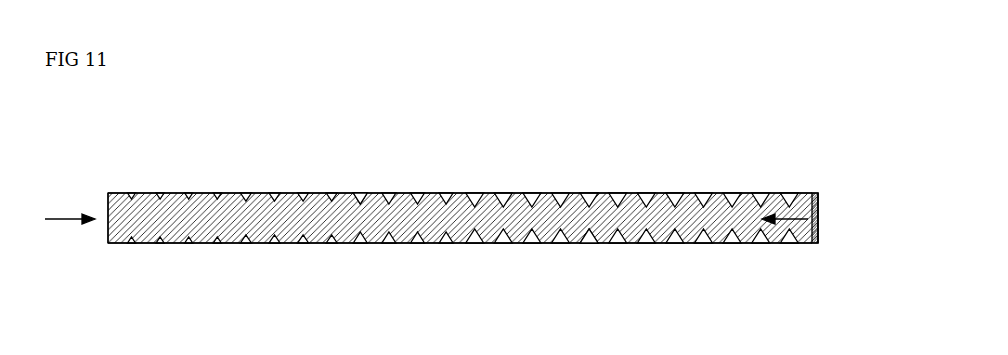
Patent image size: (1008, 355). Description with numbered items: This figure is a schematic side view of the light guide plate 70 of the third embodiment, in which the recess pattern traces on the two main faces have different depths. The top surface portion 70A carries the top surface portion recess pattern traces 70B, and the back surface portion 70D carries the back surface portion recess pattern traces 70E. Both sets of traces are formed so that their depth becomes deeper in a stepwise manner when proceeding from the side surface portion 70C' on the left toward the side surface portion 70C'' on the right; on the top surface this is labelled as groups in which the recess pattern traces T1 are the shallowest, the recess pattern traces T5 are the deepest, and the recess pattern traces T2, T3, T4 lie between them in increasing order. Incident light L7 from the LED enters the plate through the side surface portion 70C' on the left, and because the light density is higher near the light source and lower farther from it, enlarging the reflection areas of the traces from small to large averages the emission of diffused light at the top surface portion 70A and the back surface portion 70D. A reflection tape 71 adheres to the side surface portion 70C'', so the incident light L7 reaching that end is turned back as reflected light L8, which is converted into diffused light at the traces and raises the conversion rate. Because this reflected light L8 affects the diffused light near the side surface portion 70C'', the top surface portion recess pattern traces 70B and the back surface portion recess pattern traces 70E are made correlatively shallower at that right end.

The light guide plate 70 is at (459, 200).
The top surface portion 70A is at (343, 193).
The top surface portion recess pattern traces 70B is at (367, 199).
The side surface portion (left side) 70C' is at (77, 244).
The side surface portion (right side) 70C'' is at (845, 244).
The back surface portion 70D is at (520, 243).
The back surface portion recess pattern traces 70E is at (592, 243).
The reflection tape 71 is at (815, 193).
The incident light L7 is at (70, 210).
The reflected light L8 is at (807, 193).
The recess pattern traces (shallowest depth) T1 is at (132, 193).
The recess pattern traces (second depth) T2 is at (246, 193).
The recess pattern traces (third depth) T3 is at (360, 193).
The recess pattern traces (fourth depth) T4 is at (475, 193).
The recess pattern traces (deepest depth) T5 is at (589, 193).